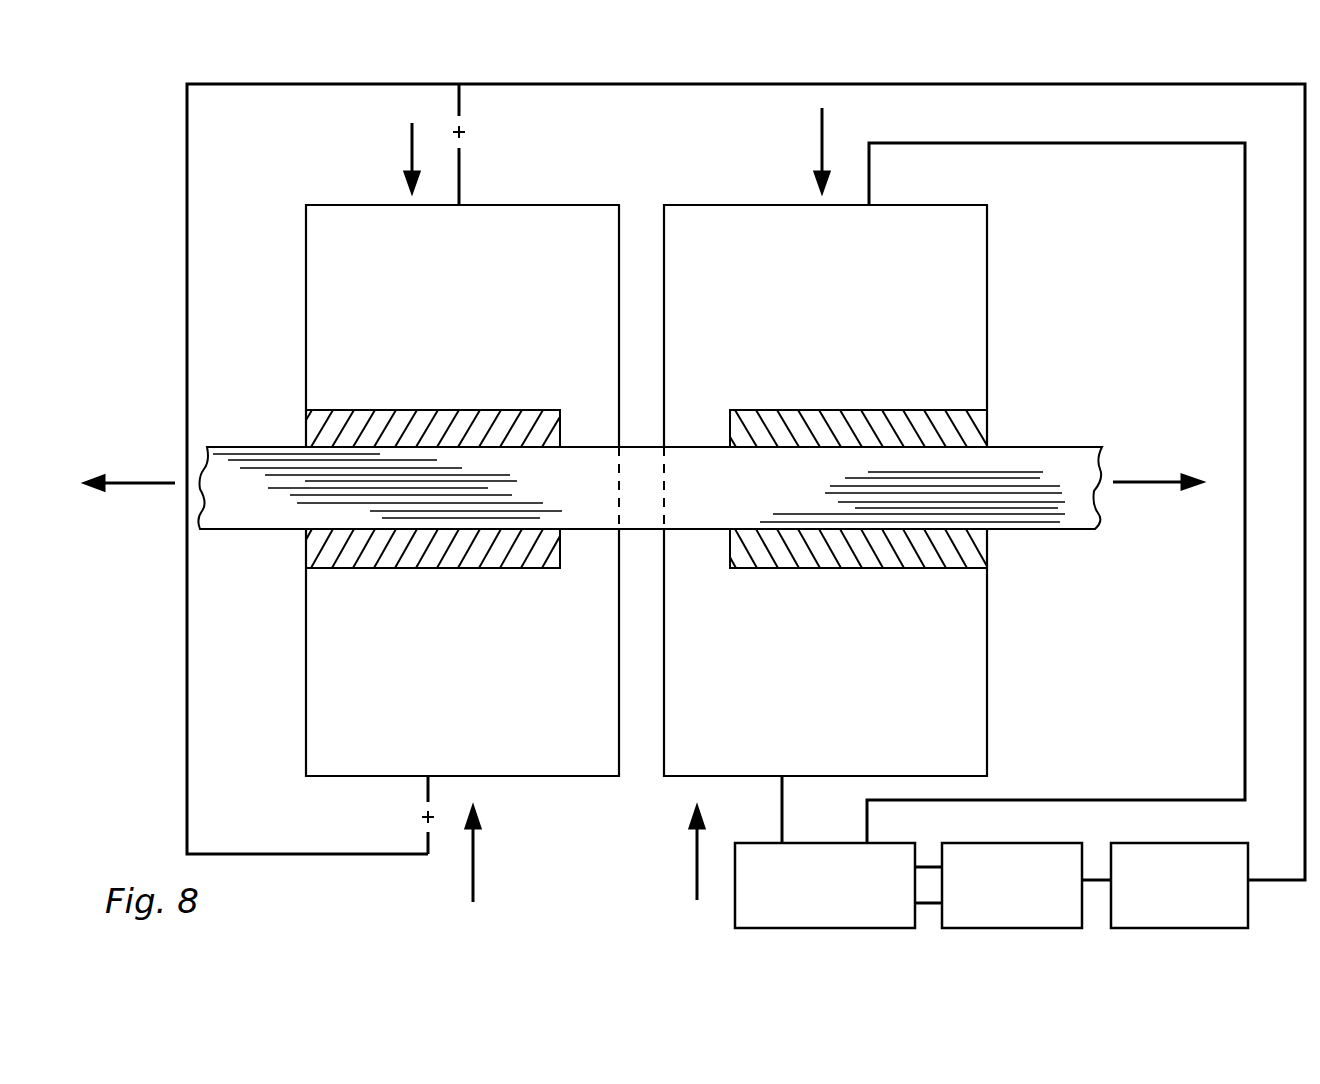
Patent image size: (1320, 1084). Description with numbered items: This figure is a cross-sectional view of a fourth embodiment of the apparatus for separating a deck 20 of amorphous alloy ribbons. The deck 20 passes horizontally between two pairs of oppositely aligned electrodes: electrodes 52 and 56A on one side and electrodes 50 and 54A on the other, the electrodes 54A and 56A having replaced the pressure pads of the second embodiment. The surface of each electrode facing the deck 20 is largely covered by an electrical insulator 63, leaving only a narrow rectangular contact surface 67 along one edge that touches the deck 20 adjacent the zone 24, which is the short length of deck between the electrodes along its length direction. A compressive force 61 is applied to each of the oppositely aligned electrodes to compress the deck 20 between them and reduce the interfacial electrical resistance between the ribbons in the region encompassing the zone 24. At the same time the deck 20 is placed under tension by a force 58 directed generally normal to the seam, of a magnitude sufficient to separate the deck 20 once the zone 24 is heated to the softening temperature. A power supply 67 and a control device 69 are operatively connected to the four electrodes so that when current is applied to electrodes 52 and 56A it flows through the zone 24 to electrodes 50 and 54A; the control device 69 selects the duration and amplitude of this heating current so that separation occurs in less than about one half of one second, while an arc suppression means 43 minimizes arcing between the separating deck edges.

The deck 20 is at (1030, 447).
The zone 24 is at (650, 497).
The arc suppression means 43 is at (889, 843).
The electrode 50 is at (987, 742).
The electrode 52 is at (306, 318).
The electrode 54A is at (987, 298).
The electrode 56A is at (306, 689).
The force 58 is at (151, 488).
The force 61 is at (411, 148).
The electrical insulator 63 is at (329, 410).
The power supply 67 is at (599, 447).
The control device 69 is at (1131, 844).